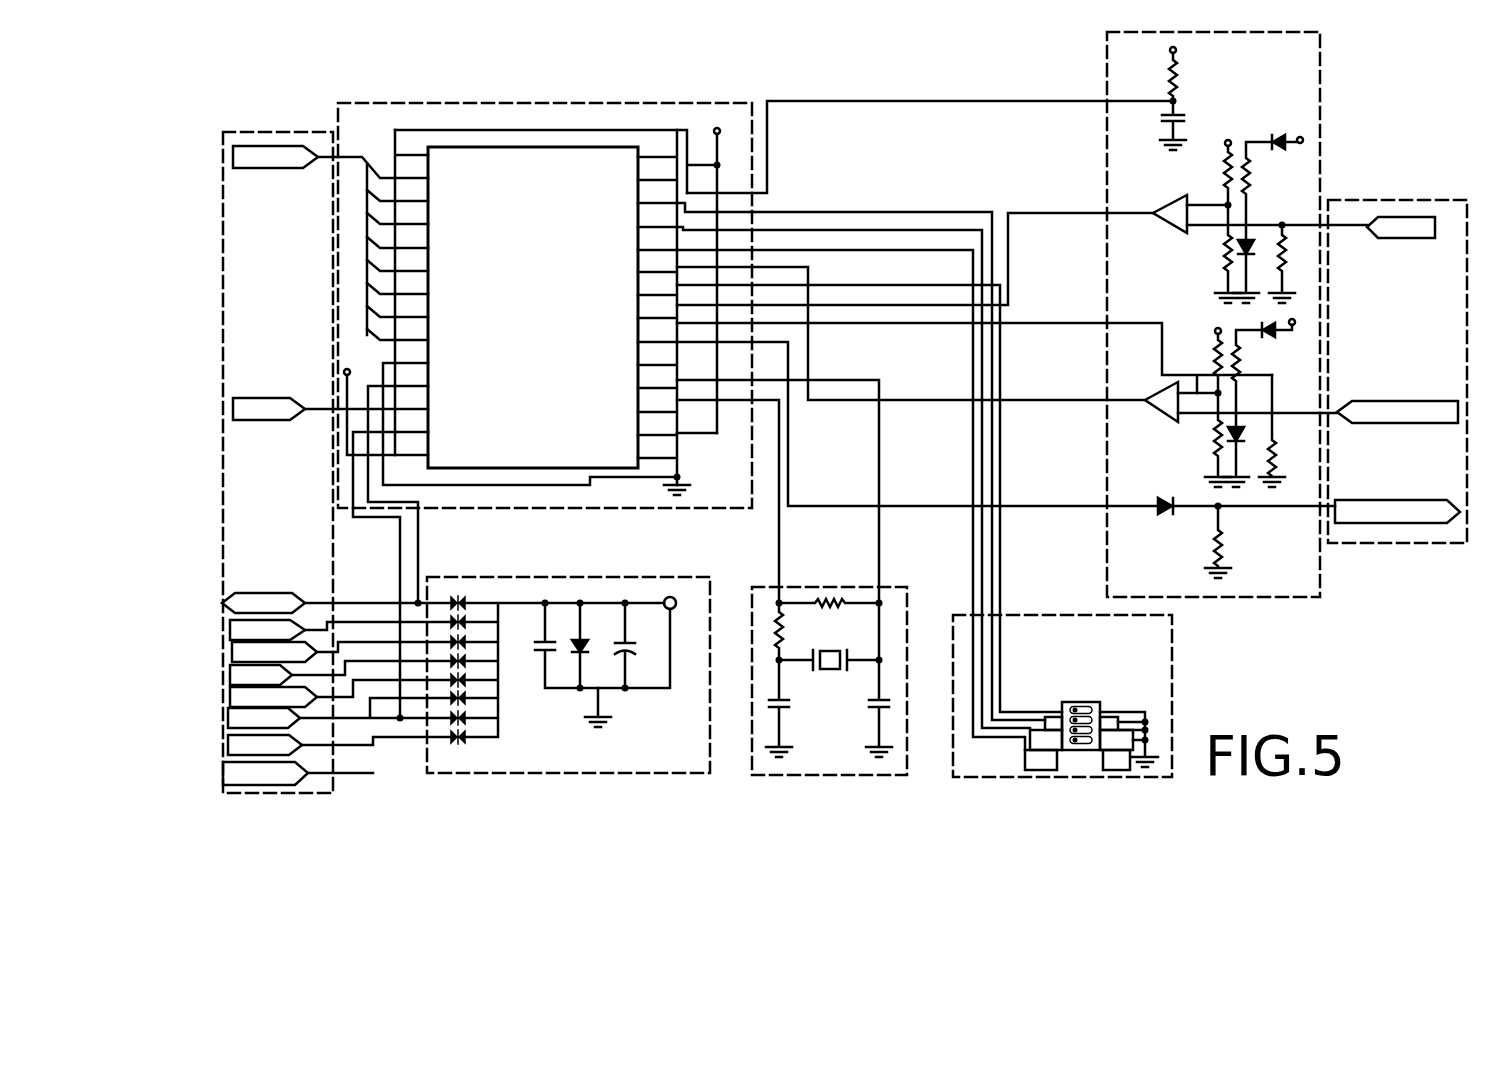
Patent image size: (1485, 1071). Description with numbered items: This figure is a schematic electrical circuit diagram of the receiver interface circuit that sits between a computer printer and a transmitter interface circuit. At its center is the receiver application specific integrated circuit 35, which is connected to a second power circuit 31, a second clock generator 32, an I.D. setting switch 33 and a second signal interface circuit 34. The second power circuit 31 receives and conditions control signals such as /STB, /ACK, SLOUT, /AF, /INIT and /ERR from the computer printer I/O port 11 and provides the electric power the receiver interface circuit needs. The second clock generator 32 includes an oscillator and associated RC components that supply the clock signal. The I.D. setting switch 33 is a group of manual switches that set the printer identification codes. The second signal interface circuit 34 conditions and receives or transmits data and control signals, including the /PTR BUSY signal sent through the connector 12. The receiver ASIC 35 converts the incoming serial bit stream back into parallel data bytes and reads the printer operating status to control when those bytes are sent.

The computer printer I/O port 11 is at (288, 130).
The connector 12 is at (1353, 203).
The second power circuit 31 is at (703, 577).
The second clock generator 32 is at (893, 588).
The I.D. setting switch 33 is at (1022, 620).
The second signal interface circuit 34 is at (1107, 75).
The receiver application specific integrated circuit 35 is at (490, 121).